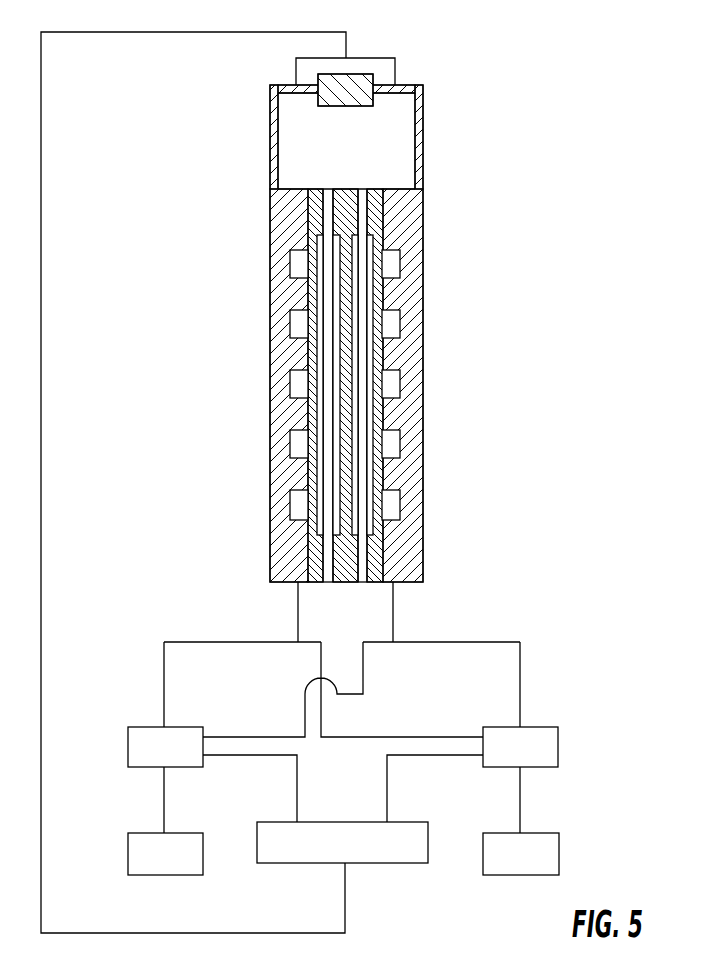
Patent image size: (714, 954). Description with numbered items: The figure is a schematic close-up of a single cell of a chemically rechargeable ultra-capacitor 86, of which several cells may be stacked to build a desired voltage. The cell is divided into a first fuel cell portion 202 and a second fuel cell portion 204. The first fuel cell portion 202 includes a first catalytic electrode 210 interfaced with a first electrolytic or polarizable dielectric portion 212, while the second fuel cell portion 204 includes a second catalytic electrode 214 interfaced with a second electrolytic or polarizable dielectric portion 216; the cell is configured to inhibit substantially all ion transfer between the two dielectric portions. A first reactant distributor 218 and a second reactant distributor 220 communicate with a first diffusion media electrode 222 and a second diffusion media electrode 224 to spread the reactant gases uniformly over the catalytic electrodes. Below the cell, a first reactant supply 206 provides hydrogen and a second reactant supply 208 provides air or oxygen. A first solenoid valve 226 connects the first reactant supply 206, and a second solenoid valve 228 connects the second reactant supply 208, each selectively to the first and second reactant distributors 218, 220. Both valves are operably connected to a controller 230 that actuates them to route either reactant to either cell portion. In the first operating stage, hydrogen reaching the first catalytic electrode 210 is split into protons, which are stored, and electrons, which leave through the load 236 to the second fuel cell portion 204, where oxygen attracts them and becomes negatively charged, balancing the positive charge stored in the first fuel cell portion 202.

The chemically rechargeable ultra-capacitor 86 is at (572, 72).
The first fuel cell portion 202 is at (568, 334).
The second fuel cell portion 204 is at (160, 323).
The first reactant supply 206 is at (559, 850).
The second reactant supply 208 is at (127, 850).
The first catalytic electrode 210 is at (384, 262).
The first electrolytic or polarizable dielectric portion 212 is at (365, 189).
The second catalytic electrode 214 is at (308, 262).
The second electrolytic or polarizable dielectric portion 216 is at (323, 189).
The first reactant distributor 218 is at (412, 222).
The second reactant distributor 220 is at (270, 222).
The first diffusion media electrode 222 is at (380, 189).
The second diffusion media electrode 224 is at (313, 189).
The first solenoid valve 226 is at (558, 742).
The second solenoid valve 228 is at (127, 742).
The controller 230 is at (395, 865).
The load 236 is at (365, 74).